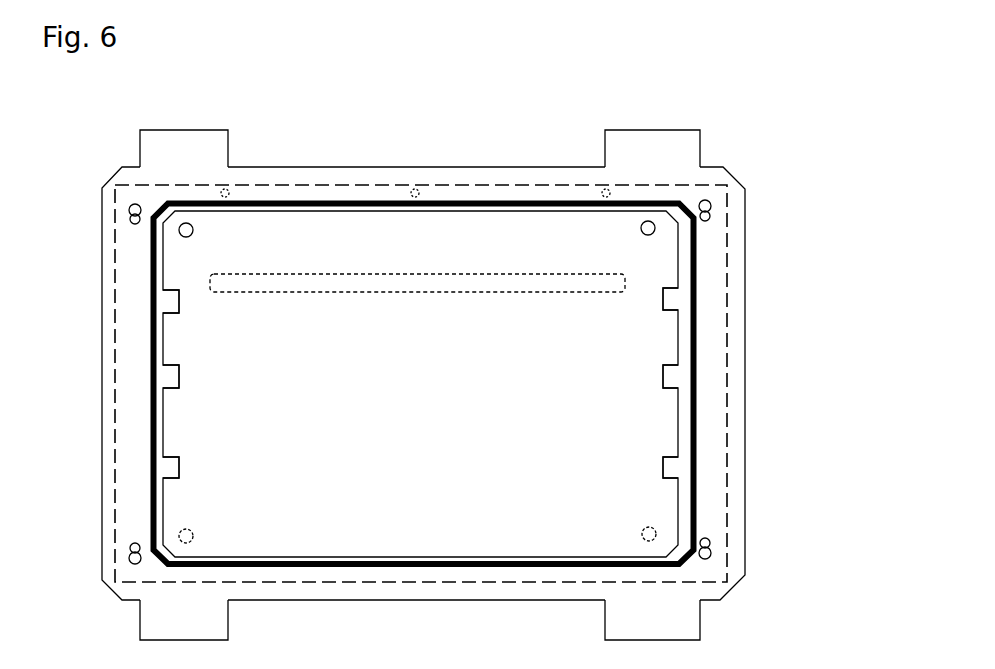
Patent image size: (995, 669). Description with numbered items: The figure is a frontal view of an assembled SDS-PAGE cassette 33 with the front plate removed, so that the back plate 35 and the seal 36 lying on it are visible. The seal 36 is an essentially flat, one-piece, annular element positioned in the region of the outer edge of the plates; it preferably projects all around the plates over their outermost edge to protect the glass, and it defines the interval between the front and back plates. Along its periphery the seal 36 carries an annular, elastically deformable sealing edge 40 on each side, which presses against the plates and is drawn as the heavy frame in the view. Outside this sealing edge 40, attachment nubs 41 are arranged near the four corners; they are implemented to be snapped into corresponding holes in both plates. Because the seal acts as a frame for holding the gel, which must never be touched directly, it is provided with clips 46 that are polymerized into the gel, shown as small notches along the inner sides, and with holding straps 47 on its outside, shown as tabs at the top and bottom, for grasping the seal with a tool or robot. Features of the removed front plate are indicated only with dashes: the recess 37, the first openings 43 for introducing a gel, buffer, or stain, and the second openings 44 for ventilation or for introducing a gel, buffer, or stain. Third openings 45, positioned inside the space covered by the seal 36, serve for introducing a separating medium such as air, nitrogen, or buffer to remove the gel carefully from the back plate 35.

The SDS-PAGE cassette 33 is at (820, 89).
The back plate 35 is at (432, 406).
The seal 36 is at (146, 381).
The recess 37 is at (320, 287).
The sealing edge 40 is at (513, 203).
The attachment nubs 41 is at (129, 209).
The first openings 43 is at (192, 233).
The second openings 44 is at (193, 536).
The third openings 45 is at (228, 196).
The clips 46 is at (173, 378).
The holding straps 47 is at (170, 164).